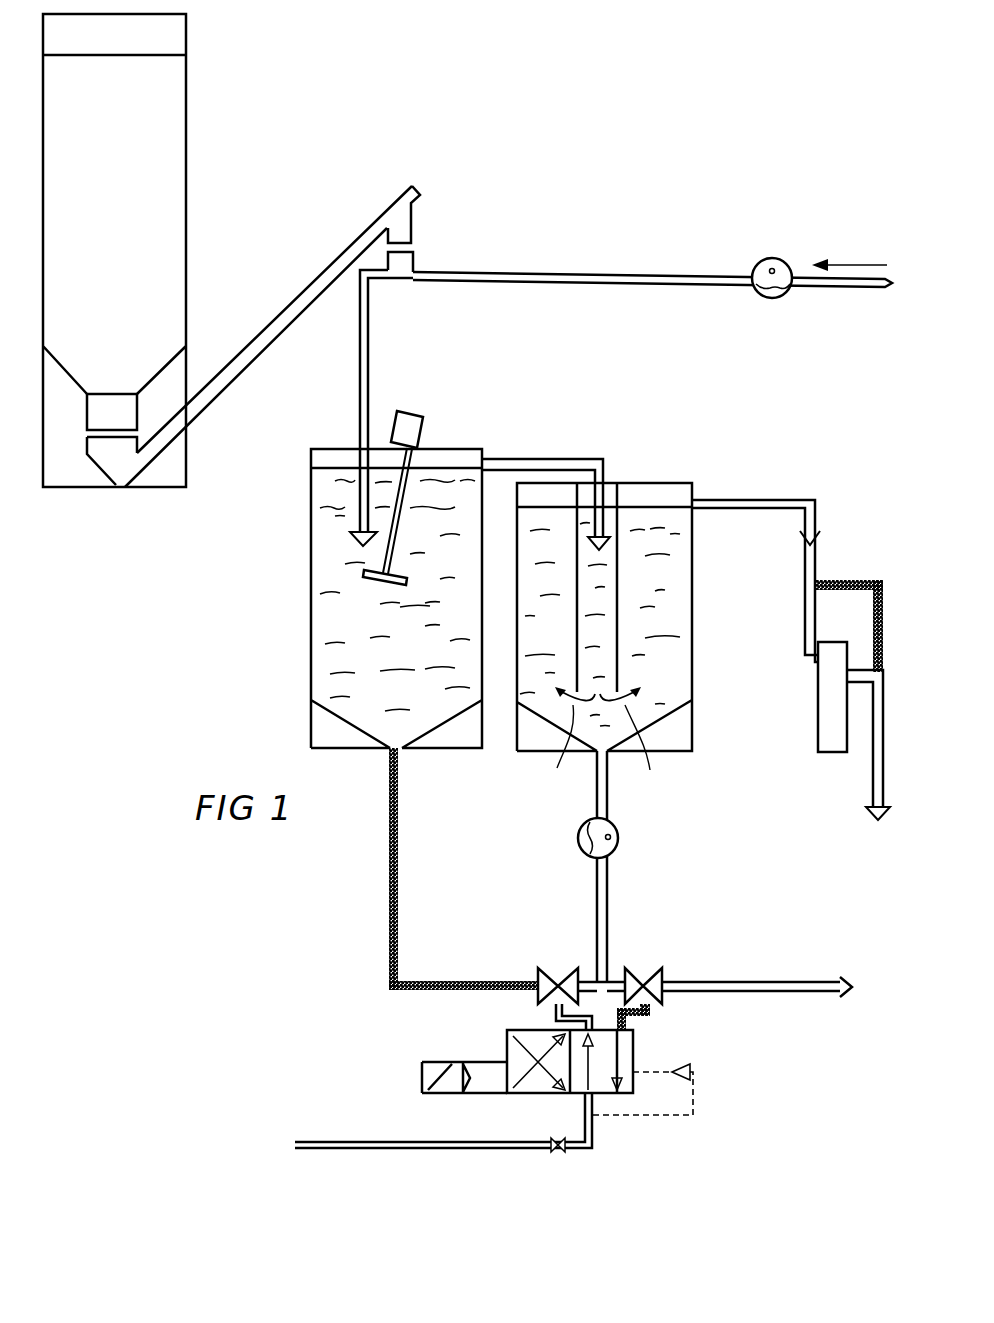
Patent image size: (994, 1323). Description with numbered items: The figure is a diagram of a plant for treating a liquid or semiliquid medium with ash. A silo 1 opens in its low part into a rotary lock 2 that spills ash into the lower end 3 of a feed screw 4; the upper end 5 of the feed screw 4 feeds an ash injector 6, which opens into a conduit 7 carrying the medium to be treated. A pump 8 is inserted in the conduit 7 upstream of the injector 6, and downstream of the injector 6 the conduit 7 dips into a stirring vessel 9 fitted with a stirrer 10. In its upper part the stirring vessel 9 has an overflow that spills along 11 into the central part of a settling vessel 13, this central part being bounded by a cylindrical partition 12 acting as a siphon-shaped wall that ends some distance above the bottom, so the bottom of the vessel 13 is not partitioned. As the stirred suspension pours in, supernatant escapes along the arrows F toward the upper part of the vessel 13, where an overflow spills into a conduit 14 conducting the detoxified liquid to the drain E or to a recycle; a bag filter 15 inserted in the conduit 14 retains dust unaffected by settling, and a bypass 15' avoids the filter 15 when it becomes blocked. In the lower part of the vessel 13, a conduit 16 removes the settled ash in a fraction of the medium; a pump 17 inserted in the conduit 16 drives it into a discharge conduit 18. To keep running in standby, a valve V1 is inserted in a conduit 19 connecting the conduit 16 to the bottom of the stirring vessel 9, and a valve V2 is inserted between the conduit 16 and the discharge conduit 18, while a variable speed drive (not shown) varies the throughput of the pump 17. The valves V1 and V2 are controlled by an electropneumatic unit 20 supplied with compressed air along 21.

The silo 1 is at (186, 175).
The rotary lock 2 is at (96, 418).
The lower end of the feed screw 3 is at (112, 468).
The feed screw 4 is at (233, 385).
The upper end of the feed screw 5 is at (400, 225).
The ash injector 6 is at (400, 265).
The conduit 7 is at (672, 276).
The pump 8 is at (774, 299).
The stirring vessel 9 is at (311, 548).
The stirrer 10 is at (413, 411).
The overflow path 11 is at (553, 458).
The cylindrical partition 12 is at (617, 667).
The settling vessel 13 is at (692, 573).
The conduit 14 is at (760, 500).
The bag filter 15 is at (798, 697).
The bypass 15' is at (849, 587).
The conduit 16 is at (597, 808).
The pump 17 is at (583, 847).
The discharge conduit 18 is at (796, 983).
The conduit 19 is at (392, 912).
The electropneumatic unit 20 is at (452, 1094).
The compressed air supply 21 is at (593, 1145).
The valve V1 is at (558, 967).
The valve V2 is at (643, 967).
The arrows F is at (604, 753).
The drain E is at (879, 839).